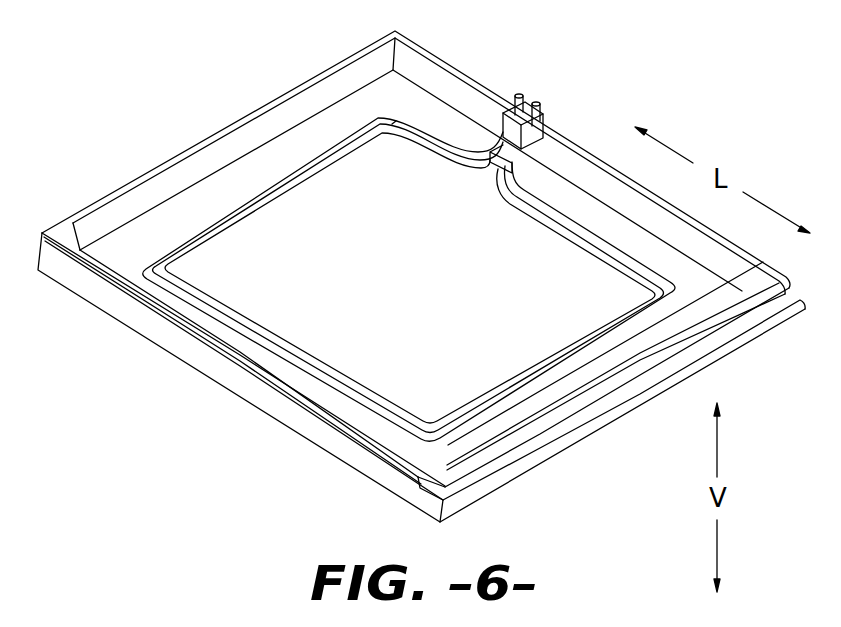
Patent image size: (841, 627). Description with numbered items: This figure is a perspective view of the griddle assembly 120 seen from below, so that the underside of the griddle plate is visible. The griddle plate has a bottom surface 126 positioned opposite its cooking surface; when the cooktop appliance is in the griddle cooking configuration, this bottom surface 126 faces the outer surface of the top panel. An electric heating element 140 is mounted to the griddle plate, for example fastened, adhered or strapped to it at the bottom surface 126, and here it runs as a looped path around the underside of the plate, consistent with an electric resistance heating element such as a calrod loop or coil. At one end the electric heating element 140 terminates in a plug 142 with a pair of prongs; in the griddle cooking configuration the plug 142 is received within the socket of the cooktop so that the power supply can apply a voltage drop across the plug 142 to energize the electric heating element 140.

The griddle assembly 120 is at (190, 89).
The bottom surface 126 is at (387, 191).
The electric heating element 140 is at (237, 208).
The plug 142 is at (523, 93).